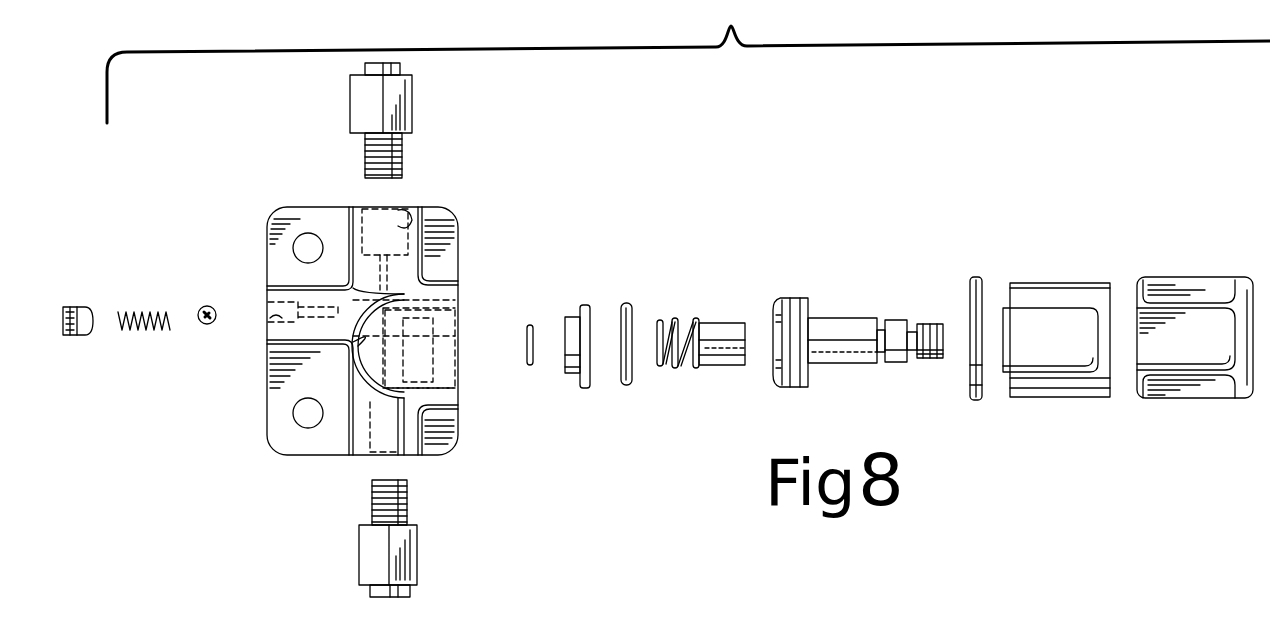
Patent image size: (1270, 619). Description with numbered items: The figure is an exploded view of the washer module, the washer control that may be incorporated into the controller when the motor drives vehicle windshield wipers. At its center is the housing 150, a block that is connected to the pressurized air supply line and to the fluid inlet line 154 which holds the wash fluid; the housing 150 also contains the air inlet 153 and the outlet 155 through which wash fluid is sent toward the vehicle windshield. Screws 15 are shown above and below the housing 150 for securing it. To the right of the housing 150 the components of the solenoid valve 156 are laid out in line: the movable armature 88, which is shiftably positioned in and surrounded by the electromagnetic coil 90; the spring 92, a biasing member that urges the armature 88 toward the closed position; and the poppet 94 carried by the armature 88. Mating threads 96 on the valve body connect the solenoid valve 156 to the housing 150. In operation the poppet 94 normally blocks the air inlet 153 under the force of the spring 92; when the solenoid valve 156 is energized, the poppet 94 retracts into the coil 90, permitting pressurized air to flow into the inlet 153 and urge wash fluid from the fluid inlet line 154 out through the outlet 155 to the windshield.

The screw 15 is at (368, 560).
The movable armature 88 is at (728, 328).
The electromagnetic coil 90 is at (1052, 298).
The spring 92 is at (688, 325).
The poppet 94 is at (652, 328).
The mating threads 96 is at (793, 383).
The housing 150 is at (288, 222).
The air inlet 153 is at (400, 348).
The fluid inlet line 154 is at (268, 322).
The outlet 155 is at (410, 210).
The solenoid valve 156 is at (890, 276).